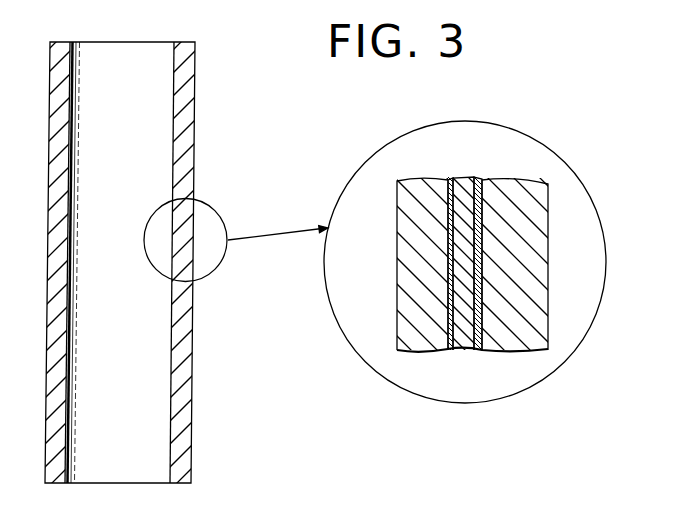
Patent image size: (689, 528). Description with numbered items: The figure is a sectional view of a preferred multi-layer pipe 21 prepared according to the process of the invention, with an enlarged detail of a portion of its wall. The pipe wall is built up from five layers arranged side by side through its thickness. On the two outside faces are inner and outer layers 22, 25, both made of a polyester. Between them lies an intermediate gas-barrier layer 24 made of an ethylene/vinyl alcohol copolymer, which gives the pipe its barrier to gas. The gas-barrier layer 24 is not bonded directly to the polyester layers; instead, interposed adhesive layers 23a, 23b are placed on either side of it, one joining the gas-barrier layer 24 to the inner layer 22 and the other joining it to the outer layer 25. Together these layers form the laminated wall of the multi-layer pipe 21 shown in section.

The multi-layer pipe 21 is at (199, 113).
The inner layer 22 is at (417, 312).
The adhesive layer 23a is at (449, 351).
The adhesive layer 23b is at (479, 351).
The intermediate gas-barrier layer 24 is at (468, 182).
The outer layer 25 is at (537, 333).